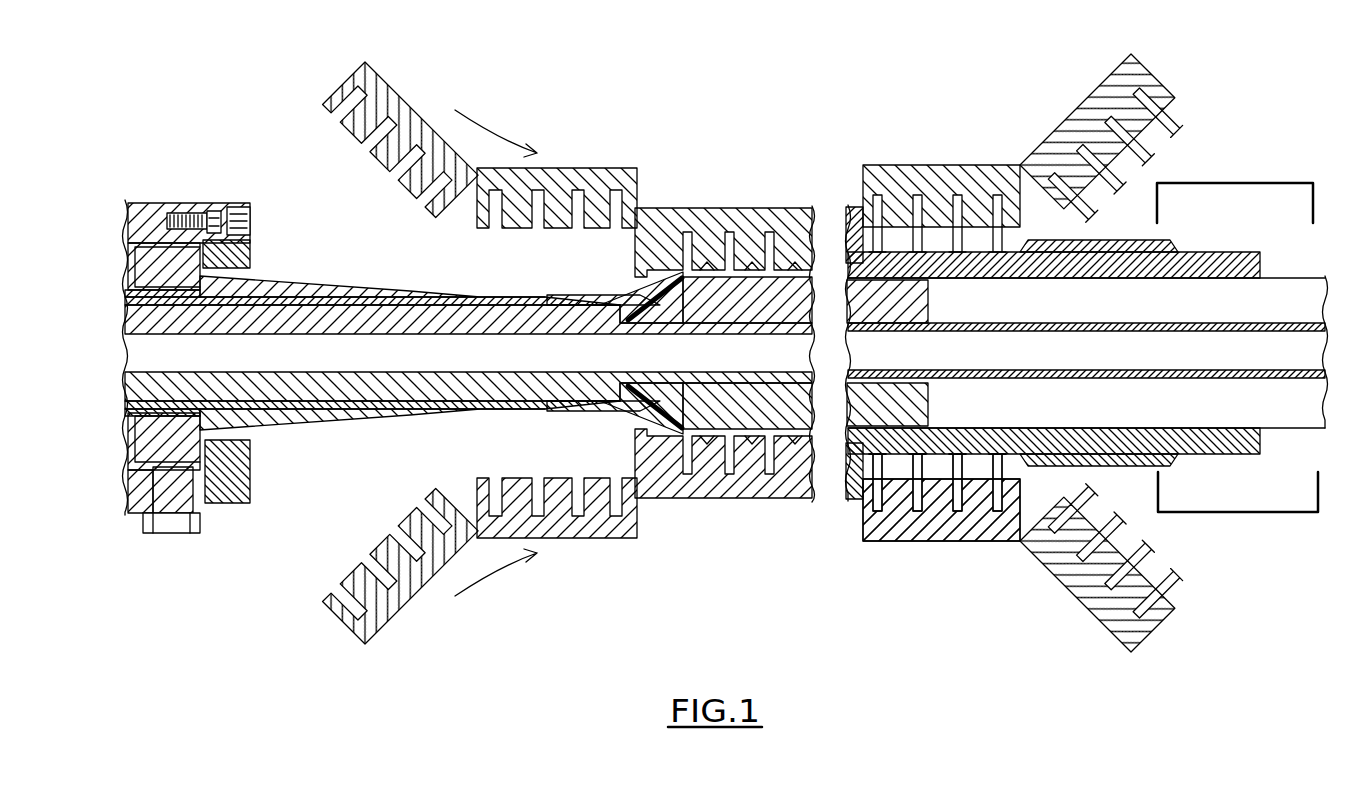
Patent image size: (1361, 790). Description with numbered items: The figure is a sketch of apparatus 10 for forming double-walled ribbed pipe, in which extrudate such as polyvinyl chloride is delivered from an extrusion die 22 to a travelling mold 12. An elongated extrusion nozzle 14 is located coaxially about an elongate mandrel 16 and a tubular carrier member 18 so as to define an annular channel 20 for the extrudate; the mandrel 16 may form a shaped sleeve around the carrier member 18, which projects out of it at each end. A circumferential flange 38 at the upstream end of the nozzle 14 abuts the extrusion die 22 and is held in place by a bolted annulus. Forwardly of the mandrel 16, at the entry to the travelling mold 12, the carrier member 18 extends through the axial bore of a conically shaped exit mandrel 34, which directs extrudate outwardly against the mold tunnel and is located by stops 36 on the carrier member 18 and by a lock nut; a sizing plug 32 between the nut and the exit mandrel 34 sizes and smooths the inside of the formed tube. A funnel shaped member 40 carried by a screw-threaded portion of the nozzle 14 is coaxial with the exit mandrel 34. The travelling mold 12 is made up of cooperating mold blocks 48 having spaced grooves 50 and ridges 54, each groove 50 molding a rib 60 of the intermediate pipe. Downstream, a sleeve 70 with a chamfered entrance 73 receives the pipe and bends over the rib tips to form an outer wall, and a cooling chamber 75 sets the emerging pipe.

The coupling device 10 is at (241, 602).
The travelling mold 12 is at (869, 163).
The elongated extrusion nozzle 14 is at (334, 288).
The mandrel 16 is at (385, 306).
The carrier member 18 is at (290, 410).
The annular channel 20 is at (430, 312).
The extrusion die 22 is at (152, 205).
The sizing plug 32 is at (768, 290).
The exit mandrel 34 is at (626, 402).
The stops 36 is at (545, 402).
The circumferential flange 38 is at (153, 443).
The funnel shaped member 40 is at (632, 297).
The mold blocks 48 is at (711, 226).
The grooves 50 is at (1105, 610).
The ridges 54 is at (1108, 544).
The rib 60 is at (1003, 462).
The sleeve 70 is at (1173, 250).
The chamfered entrance 73 is at (1025, 242).
The cooling chamber 75 is at (1266, 512).